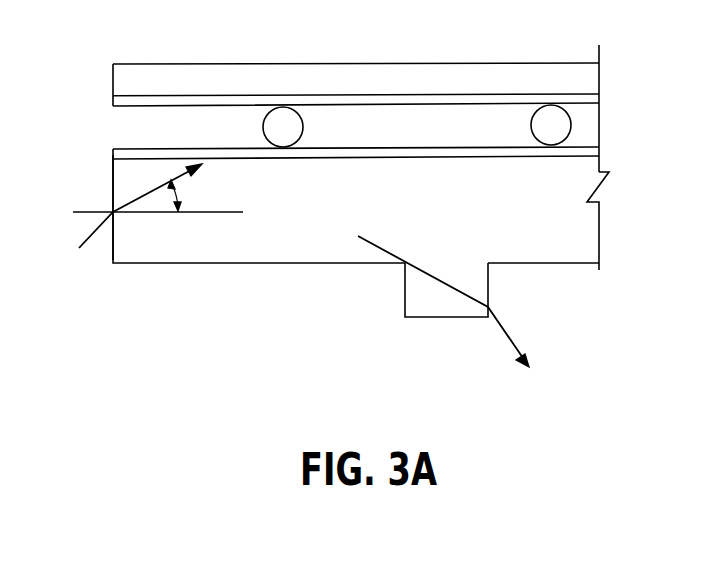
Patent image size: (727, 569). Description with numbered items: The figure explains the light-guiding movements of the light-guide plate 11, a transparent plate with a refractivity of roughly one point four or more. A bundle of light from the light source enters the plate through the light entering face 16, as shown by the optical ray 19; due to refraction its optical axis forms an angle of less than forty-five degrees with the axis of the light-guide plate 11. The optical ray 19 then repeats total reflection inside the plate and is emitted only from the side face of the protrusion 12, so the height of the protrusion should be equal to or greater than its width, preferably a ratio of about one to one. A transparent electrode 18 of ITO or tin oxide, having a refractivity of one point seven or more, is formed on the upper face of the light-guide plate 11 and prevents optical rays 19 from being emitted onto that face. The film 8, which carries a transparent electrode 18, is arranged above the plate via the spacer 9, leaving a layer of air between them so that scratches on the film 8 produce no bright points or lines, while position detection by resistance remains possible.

The film 8 is at (468, 77).
The spacer 9 is at (279, 123).
The light-guide plate 11 is at (548, 244).
The protrusion 12 is at (429, 306).
The light entering face 16 is at (112, 190).
The transparent electrode 18 is at (320, 155).
The optical ray 19 is at (160, 188).